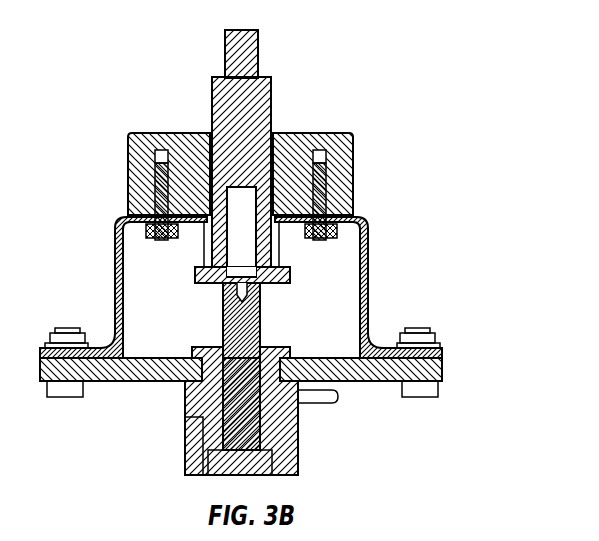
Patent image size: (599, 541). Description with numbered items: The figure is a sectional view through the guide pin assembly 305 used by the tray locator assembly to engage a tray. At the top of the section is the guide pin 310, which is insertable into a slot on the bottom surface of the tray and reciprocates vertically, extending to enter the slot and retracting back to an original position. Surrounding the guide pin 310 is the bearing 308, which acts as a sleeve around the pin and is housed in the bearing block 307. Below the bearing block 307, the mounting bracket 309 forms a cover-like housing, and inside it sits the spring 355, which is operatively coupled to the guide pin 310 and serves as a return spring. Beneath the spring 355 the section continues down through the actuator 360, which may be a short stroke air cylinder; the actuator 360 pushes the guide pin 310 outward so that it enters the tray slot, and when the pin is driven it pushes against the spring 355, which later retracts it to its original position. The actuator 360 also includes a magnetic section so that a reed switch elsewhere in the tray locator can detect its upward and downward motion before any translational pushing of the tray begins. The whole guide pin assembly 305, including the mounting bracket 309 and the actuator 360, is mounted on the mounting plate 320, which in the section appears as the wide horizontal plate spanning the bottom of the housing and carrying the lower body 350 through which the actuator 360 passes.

The guide pin assembly 305 is at (437, 118).
The bearing block 307 is at (358, 175).
The bearing 308 is at (275, 133).
The mounting bracket 309 is at (372, 282).
The guide pin 310 is at (247, 34).
The mounting plate 320 is at (422, 368).
The base block 350 is at (287, 452).
The spring 355 is at (203, 251).
The actuator 360 is at (265, 410).